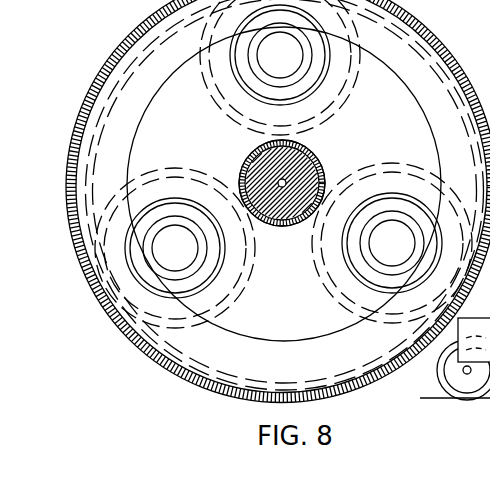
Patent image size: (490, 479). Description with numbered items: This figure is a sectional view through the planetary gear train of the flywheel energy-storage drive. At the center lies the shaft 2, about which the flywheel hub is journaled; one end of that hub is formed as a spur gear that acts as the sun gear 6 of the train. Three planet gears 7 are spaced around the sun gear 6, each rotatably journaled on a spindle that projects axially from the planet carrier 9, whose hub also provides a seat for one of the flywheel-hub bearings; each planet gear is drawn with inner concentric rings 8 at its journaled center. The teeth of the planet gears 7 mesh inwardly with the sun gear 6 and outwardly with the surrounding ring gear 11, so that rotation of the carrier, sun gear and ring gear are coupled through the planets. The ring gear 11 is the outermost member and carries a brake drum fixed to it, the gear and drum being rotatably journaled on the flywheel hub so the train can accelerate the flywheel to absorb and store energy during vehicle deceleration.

The shaft 2 is at (300, 158).
The sun gear 6 is at (282, 227).
The planet gears 7 is at (307, 28).
The planet gear bearing 8 is at (297, 88).
The planet carrier 9 is at (433, 131).
The ring gear 11 is at (275, 201).